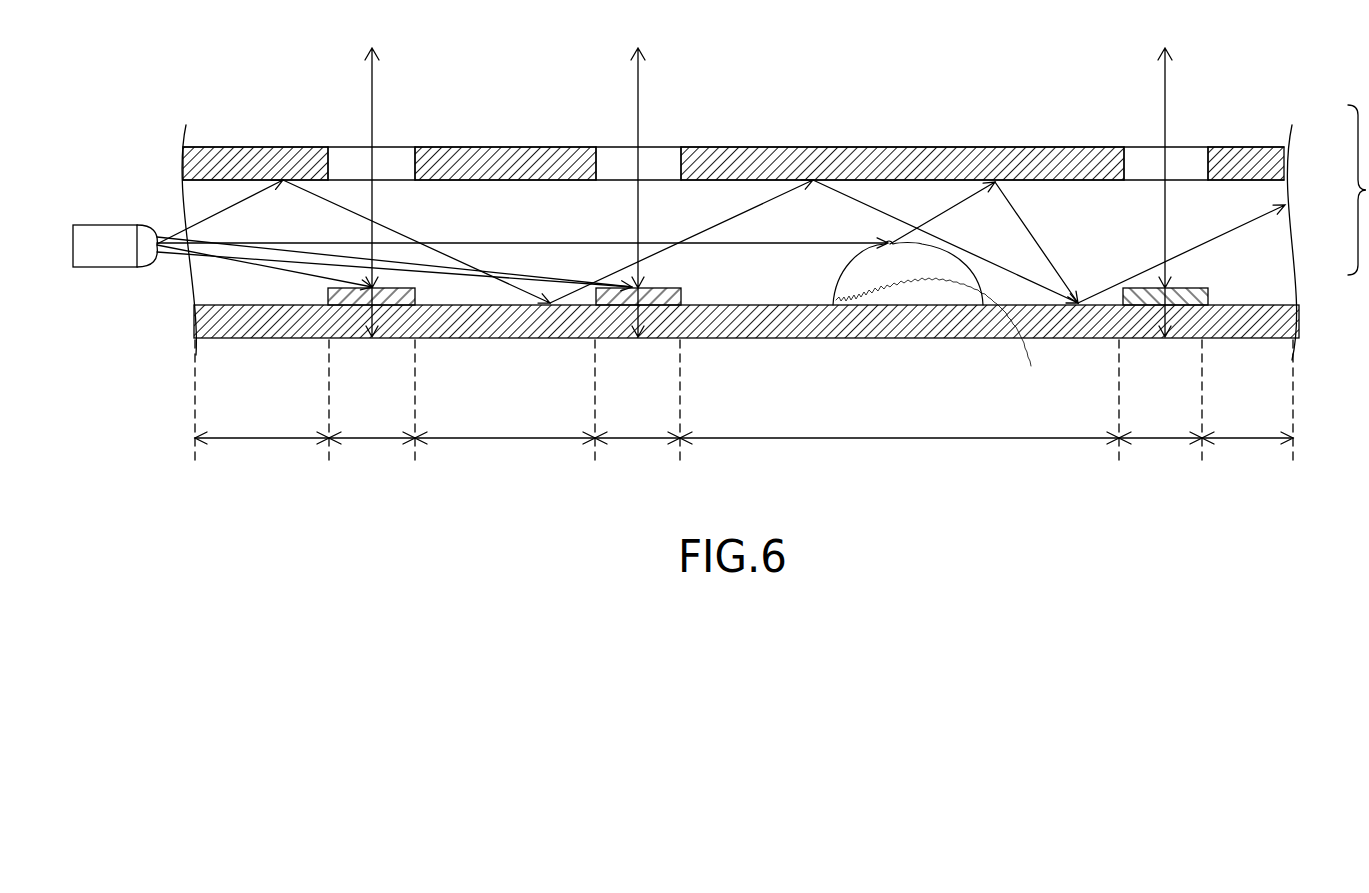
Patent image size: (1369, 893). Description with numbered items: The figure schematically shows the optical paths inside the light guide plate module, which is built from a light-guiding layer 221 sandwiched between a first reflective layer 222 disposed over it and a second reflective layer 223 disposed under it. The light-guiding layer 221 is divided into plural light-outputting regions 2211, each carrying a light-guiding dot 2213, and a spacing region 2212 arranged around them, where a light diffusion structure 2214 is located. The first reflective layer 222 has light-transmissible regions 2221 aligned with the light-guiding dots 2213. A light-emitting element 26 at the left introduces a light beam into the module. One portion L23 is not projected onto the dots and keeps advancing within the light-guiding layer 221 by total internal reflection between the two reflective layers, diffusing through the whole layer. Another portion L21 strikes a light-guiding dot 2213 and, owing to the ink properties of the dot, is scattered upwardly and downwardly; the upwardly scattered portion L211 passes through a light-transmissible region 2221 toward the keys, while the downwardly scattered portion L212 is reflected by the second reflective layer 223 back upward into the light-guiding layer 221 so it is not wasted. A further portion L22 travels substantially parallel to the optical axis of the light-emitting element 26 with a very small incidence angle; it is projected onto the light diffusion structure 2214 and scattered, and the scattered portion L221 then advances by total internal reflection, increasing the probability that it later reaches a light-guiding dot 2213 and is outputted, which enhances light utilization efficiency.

The light-emitting element 26 is at (123, 255).
The light-guiding layer 221 is at (1262, 197).
The first reflective layer 222 is at (1232, 155).
The second reflective layer 223 is at (1288, 320).
The light-transmissible region 2221 is at (392, 162).
The light-outputting region 2211 is at (388, 438).
The spacing region 2212 is at (277, 438).
The light-guiding dot 2213 is at (415, 298).
The light diffusion structure 2214 is at (908, 290).
The portion of the light beam projected onto the light-guiding dots L21 is at (213, 262).
The upwardly scattered portion of the light beam L211 is at (370, 135).
The downwardly scattered portion of the light beam L212 is at (360, 313).
The portion of the light beam parallel to the optical axis L22 is at (567, 242).
The scattered portion of the light beam L221 is at (1068, 223).
The portion of the light beam not projected onto the light-guiding dots L23 is at (197, 218).